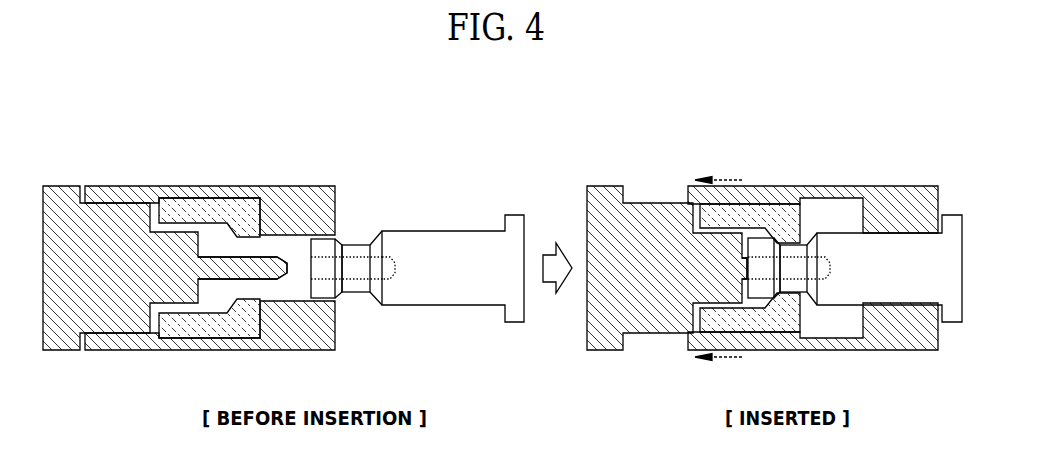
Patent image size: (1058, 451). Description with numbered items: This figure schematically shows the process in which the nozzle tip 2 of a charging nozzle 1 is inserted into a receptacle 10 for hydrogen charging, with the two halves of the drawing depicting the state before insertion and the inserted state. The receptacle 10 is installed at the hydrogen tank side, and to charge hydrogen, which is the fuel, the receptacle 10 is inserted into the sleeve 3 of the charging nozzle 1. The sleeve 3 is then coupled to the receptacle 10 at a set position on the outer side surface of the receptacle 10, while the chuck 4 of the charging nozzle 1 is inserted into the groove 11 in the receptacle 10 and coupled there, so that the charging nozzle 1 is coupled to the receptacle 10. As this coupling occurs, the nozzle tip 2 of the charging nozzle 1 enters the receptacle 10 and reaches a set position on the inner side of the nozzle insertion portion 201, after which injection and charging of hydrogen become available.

The charging nozzle 1 is at (238, 164).
The nozzle tip 2 is at (217, 273).
The sleeve 3 is at (297, 197).
The chuck 4 is at (206, 210).
The receptacle 10 is at (440, 216).
The groove 11 is at (358, 243).
The nozzle insertion portion 201 is at (360, 278).